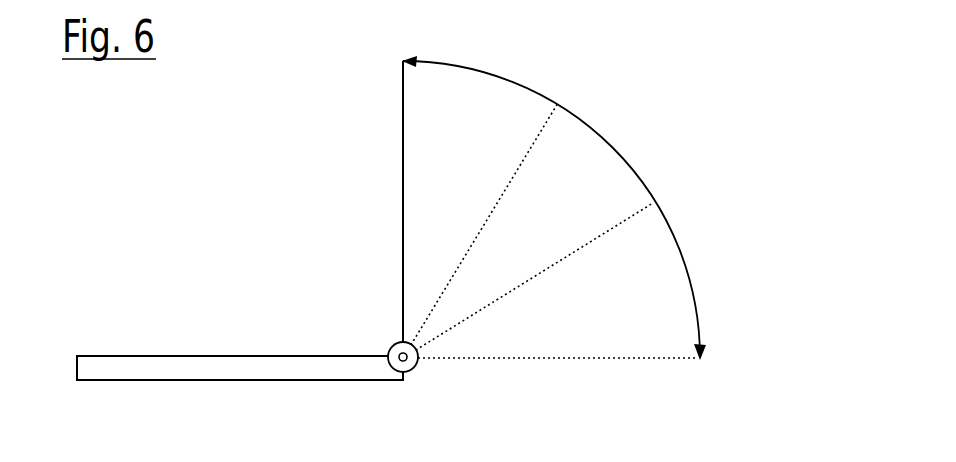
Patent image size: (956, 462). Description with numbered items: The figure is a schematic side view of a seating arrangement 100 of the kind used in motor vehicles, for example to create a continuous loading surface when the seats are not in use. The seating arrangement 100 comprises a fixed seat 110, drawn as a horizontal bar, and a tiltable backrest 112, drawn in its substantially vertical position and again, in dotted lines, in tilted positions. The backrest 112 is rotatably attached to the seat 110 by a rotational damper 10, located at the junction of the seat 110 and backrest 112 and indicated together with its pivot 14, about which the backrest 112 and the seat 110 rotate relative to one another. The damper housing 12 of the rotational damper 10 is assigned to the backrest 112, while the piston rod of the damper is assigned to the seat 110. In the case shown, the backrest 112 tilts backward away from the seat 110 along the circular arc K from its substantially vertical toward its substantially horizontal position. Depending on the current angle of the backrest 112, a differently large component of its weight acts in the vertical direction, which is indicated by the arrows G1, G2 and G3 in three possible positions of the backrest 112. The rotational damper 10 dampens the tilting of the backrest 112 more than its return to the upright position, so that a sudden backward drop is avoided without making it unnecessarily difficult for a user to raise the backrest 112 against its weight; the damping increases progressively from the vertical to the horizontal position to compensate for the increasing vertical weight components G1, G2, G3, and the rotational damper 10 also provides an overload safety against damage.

The seating arrangement 100 is at (387, 241).
The fixed seat 110 is at (104, 362).
The tiltable backrest 112 is at (402, 122).
The damper housing 12 is at (401, 371).
The pivot axis 14 is at (394, 353).
The rotational damper 10 is at (430, 380).
The weight component arrow G1 is at (532, 147).
The weight component arrow G2 is at (582, 246).
The weight component arrow G3 is at (608, 358).
The circular arc K is at (714, 347).